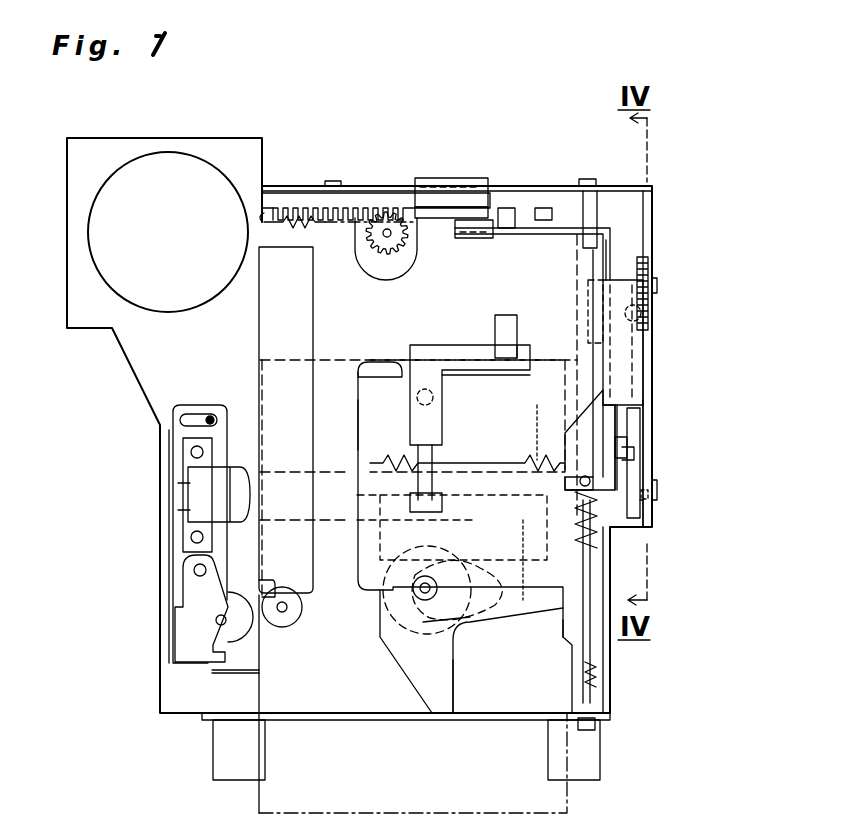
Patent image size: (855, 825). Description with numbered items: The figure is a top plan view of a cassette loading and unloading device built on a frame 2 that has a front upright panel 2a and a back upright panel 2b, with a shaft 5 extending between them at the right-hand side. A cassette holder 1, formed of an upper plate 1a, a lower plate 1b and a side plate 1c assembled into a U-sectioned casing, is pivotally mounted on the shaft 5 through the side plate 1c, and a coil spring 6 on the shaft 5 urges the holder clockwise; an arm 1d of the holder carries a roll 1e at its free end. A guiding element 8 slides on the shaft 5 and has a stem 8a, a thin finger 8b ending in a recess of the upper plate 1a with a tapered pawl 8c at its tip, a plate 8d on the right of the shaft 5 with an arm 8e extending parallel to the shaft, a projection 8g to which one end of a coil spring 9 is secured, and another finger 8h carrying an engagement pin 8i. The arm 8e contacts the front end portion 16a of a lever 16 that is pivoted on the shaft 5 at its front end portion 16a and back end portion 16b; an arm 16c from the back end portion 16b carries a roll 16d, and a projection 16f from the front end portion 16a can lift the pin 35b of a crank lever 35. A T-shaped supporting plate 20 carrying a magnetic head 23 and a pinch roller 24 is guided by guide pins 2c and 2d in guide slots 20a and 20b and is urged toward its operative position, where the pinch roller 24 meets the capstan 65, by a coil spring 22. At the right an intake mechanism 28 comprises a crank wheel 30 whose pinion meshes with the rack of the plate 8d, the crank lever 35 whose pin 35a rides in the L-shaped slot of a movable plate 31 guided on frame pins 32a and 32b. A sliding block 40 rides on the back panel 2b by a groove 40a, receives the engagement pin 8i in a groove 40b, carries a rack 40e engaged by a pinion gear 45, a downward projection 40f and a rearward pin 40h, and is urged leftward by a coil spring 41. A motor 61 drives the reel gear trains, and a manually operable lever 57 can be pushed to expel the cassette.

The cassette holder 1 is at (368, 362).
The upper plate 1a is at (368, 405).
The lower plate 1b is at (487, 622).
The side plate 1c is at (562, 640).
The arm 1d is at (478, 240).
The roll 1e is at (455, 238).
The frame 2 is at (160, 690).
The front upright panel 2a is at (468, 720).
The back upright panel 2b is at (590, 184).
The guide pin 2c is at (210, 415).
The guide pin 2d is at (463, 524).
The shaft 5 is at (598, 713).
The coil spring 6 is at (596, 560).
The guiding element 8 is at (465, 338).
The stem 8a is at (460, 348).
The finger 8b is at (432, 432).
The tapered pawl 8c is at (425, 560).
The plate 8d is at (622, 288).
The arm 8e is at (600, 470).
The projection 8g is at (580, 484).
The finger 8h is at (495, 352).
The engagement pin 8i is at (505, 330).
The coil spring 9 is at (600, 675).
The lever 16 is at (620, 410).
The front end portion 16a is at (605, 493).
The back end portion 16b is at (612, 230).
The arm 16c is at (560, 228).
The roll 16d is at (505, 207).
The projection 16f is at (622, 465).
The supporting plate 20 is at (173, 455).
The guide slot 20a is at (193, 416).
The guide slot 20b is at (523, 605).
The coil spring 22 is at (467, 416).
The magnetic head 23 is at (205, 500).
The pinch roller 24 is at (243, 645).
The intake mechanism 28 is at (645, 332).
The crank wheel 30 is at (650, 262).
The movable plate 31 is at (655, 512).
The pin 32a is at (650, 510).
The pin 32b is at (650, 400).
The crank lever 35 is at (640, 420).
The pin 35a is at (650, 480).
The pin 35b is at (630, 455).
The sliding block 40 is at (370, 205).
The groove 40a is at (420, 180).
The groove 40b is at (447, 210).
The rack 40e is at (310, 207).
The projection 40f is at (543, 207).
The pin 40h is at (333, 180).
The coil spring 41 is at (298, 213).
The pinion gear 45 is at (382, 252).
The manually operable lever 57 is at (598, 748).
The motor 61 is at (125, 268).
The capstan 65 is at (290, 615).